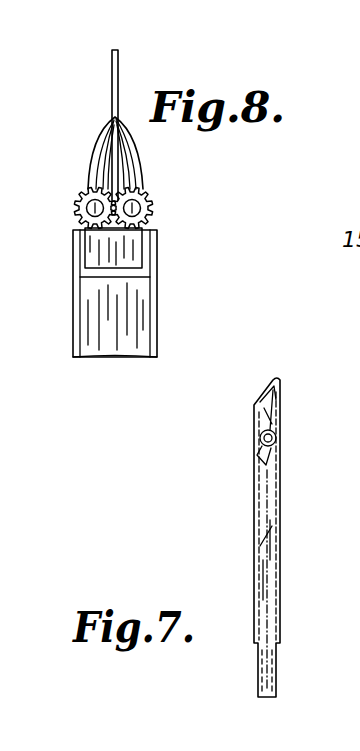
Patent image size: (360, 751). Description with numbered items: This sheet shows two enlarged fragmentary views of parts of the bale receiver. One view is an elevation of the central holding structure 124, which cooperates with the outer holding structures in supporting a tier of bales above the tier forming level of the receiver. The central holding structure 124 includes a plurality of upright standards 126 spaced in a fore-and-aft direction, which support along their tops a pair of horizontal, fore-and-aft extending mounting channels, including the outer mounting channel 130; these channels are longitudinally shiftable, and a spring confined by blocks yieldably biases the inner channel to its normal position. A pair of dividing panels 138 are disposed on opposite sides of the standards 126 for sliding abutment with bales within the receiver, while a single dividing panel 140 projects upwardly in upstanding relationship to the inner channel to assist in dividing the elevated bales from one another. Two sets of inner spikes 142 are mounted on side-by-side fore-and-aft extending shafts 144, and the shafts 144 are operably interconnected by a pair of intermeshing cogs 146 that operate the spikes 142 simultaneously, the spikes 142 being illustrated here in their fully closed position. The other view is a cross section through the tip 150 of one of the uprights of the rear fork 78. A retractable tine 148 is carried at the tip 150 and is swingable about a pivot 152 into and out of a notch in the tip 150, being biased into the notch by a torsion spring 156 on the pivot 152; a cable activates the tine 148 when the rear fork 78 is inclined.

In FIG. 8, the dividing panel 140 is at (112, 54).
In FIG. 8, the inner spikes 142 is at (127, 137).
In FIG. 8, the central holding structure 124 is at (153, 179).
In FIG. 8, the shafts 144 is at (92, 206).
In FIG. 8, the intermeshing cogs 146 is at (84, 197).
In FIG. 8, the dividing panels 138 is at (73, 315).
In FIG. 8, the outer mounting channel 130 is at (145, 258).
In FIG. 8, the upright standards 126 is at (107, 350).
In FIG. 7, the tip 150 is at (270, 525).
In FIG. 7, the retractable tine 148 is at (278, 390).
In FIG. 7, the pivot 152 is at (279, 433).
In FIG. 7, the torsion spring 156 is at (258, 431).
In FIG. 7, the rear fork 78 is at (257, 673).